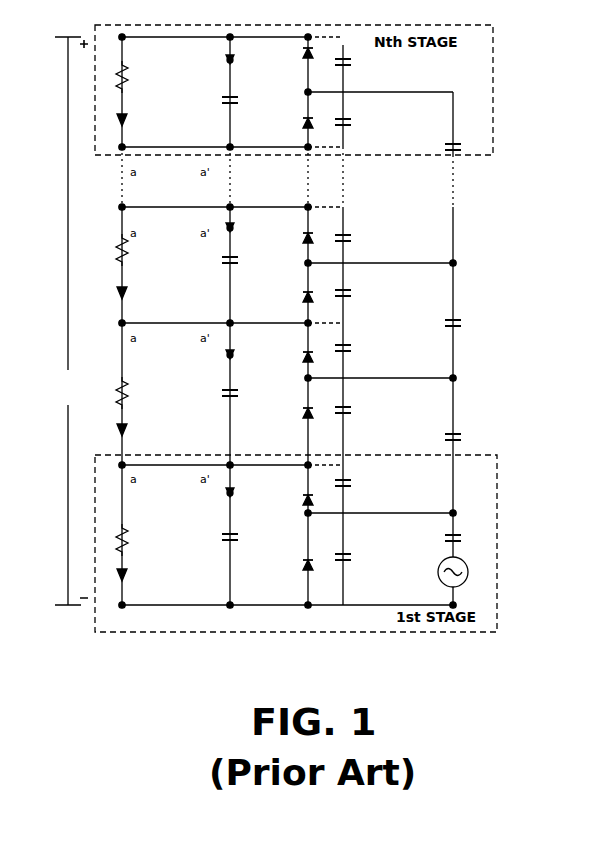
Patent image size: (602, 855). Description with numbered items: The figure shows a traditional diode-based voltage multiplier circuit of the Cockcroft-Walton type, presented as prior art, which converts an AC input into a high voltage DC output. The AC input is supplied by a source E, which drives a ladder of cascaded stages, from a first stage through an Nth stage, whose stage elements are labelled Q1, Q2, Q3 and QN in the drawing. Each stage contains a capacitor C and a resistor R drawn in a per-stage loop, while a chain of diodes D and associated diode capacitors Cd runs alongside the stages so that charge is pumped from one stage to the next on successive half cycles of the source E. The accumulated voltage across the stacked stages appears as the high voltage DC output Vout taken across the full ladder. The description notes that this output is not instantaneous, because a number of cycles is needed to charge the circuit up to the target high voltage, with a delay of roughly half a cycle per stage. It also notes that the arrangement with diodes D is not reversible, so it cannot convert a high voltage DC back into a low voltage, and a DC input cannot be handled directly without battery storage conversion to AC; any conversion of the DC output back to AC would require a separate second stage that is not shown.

The output voltage terminals Vout is at (64, 321).
The resistor R is at (131, 324).
The Nth stage transistor QN is at (242, 66).
The third stage transistor Q3 is at (242, 235).
The second stage transistor Q2 is at (242, 362).
The first stage transistor Q1 is at (242, 499).
The capacitor C is at (341, 319).
The diode D is at (308, 309).
The diode capacitor Cd is at (353, 311).
The AC voltage source E sin(2πt/T) E is at (596, 572).